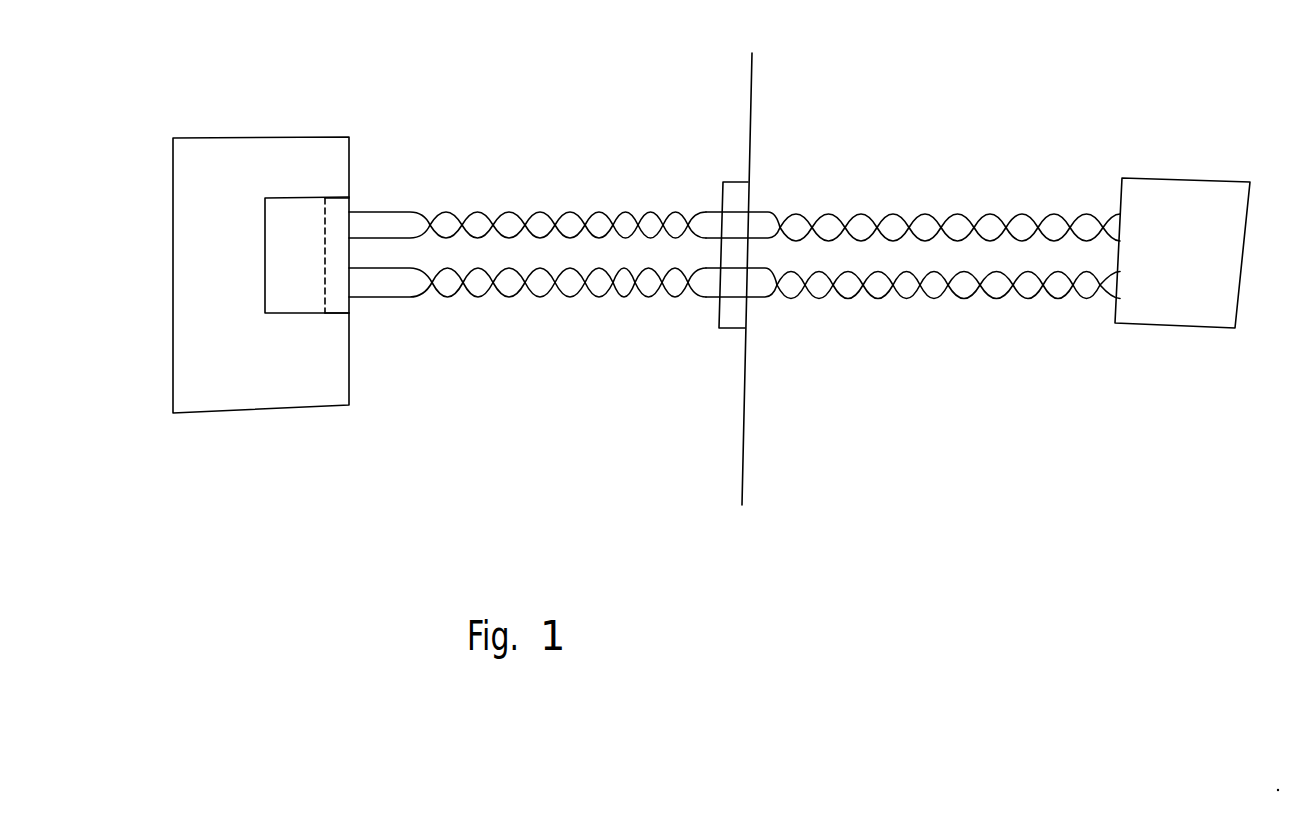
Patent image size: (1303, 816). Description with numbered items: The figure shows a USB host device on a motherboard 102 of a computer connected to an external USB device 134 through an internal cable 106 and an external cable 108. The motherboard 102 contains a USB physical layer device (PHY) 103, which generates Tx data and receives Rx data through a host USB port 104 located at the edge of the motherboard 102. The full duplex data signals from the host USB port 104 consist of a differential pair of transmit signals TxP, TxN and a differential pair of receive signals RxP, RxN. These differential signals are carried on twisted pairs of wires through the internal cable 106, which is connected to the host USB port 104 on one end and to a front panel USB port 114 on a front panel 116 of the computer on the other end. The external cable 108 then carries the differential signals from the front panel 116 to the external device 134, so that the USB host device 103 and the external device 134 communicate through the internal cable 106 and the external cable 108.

The motherboard 102 is at (206, 137).
The USB physical layer device (PHY) 103 is at (260, 314).
The host USB port 104 is at (327, 314).
The internal cable 106 is at (548, 303).
The external cable 108 is at (930, 308).
The front panel USB port 114 is at (728, 182).
The front panel 116 is at (752, 80).
The external USB device 134 is at (1150, 177).